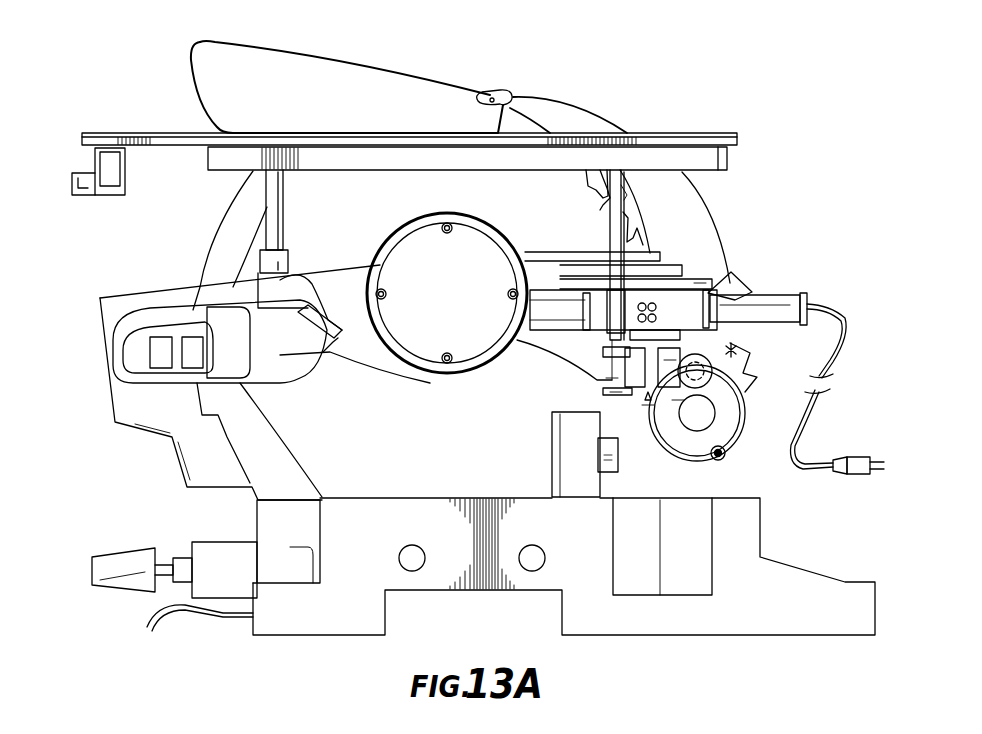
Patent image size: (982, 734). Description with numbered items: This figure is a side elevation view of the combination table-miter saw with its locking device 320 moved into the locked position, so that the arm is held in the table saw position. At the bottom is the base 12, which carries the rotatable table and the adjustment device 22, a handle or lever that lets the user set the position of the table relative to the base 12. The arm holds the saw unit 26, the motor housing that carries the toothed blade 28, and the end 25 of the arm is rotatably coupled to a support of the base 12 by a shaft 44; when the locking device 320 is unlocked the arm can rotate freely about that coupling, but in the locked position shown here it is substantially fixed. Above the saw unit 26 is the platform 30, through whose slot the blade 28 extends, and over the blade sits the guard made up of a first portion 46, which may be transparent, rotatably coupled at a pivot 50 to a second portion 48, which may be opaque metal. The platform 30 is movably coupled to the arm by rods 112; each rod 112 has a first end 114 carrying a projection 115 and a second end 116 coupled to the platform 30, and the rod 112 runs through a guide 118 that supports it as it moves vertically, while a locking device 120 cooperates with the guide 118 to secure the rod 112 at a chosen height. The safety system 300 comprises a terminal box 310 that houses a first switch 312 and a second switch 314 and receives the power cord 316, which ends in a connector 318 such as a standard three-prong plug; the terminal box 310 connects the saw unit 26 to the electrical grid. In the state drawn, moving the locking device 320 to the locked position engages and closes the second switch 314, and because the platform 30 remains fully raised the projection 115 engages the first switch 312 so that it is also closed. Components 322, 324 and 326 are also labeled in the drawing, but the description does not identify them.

The base 12 is at (295, 636).
The adjustment device 22 is at (103, 560).
The end 25 is at (750, 424).
The saw unit 26 is at (418, 345).
The blade 28 is at (598, 185).
The platform 30 is at (82, 135).
The shaft 44 is at (717, 407).
The first portion 46 is at (230, 58).
The second portion 48 is at (552, 108).
The pivot 50 is at (493, 100).
The rod 112 is at (268, 205).
The first end 114 is at (612, 380).
The projection 115 is at (616, 392).
The second end 116 is at (622, 190).
The guide 118 is at (268, 264).
The locking device 120 is at (327, 305).
The safety system 300 is at (655, 430).
The terminal box 310 is at (700, 283).
The first switch 312 is at (648, 405).
The second switch 314 is at (678, 400).
The power cord 316 is at (820, 407).
The connector 318 is at (858, 460).
The locking device 320 is at (752, 320).
The solenoid 322 is at (700, 368).
The fastener 324 is at (731, 350).
The link 326 is at (670, 360).